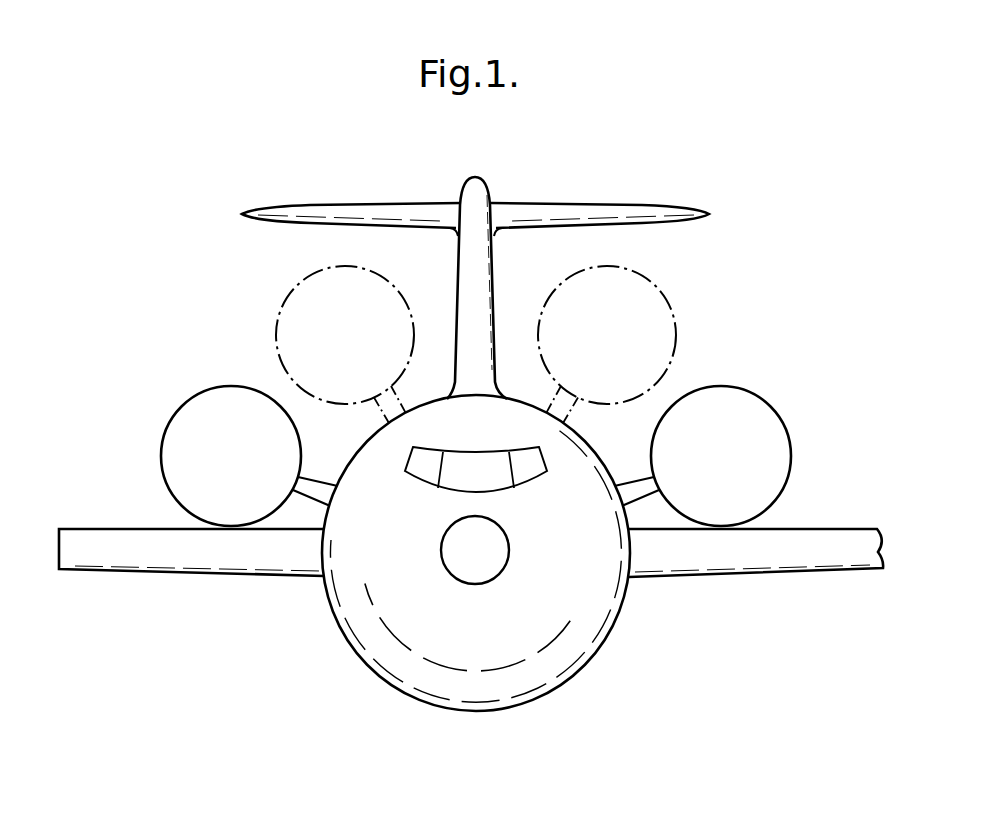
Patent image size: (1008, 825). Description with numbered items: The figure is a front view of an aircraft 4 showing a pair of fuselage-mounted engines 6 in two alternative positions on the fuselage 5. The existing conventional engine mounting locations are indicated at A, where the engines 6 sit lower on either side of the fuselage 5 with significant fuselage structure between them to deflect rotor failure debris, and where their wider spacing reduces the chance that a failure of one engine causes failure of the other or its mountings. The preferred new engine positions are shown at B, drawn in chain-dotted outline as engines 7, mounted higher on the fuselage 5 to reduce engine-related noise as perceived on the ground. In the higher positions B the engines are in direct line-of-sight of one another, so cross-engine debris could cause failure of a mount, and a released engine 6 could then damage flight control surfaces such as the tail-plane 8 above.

The aircraft 4 is at (471, 430).
The fuselage 5 is at (570, 653).
The engines 6 is at (162, 483).
The engine in alternative position B 7 is at (302, 287).
The tail-plane 8 is at (505, 216).
The conventional engine mounting positions A is at (175, 415).
The new engine positions B is at (278, 318).